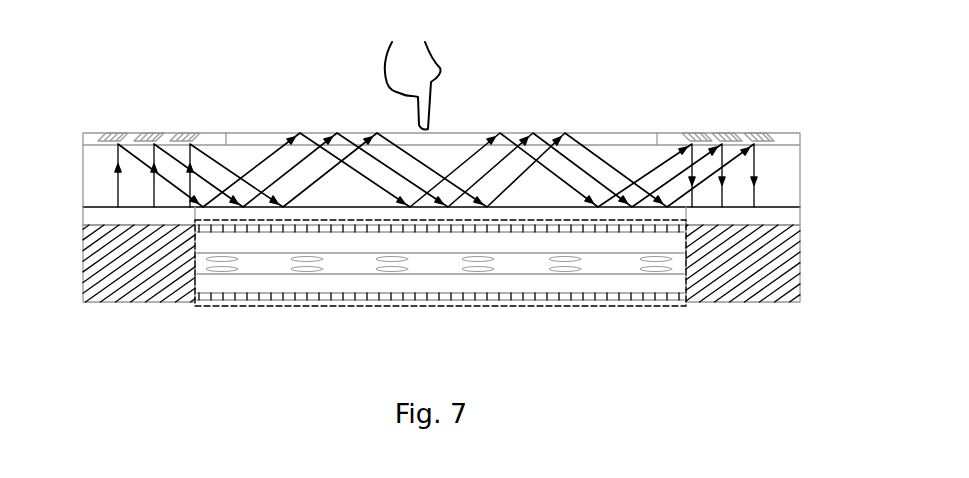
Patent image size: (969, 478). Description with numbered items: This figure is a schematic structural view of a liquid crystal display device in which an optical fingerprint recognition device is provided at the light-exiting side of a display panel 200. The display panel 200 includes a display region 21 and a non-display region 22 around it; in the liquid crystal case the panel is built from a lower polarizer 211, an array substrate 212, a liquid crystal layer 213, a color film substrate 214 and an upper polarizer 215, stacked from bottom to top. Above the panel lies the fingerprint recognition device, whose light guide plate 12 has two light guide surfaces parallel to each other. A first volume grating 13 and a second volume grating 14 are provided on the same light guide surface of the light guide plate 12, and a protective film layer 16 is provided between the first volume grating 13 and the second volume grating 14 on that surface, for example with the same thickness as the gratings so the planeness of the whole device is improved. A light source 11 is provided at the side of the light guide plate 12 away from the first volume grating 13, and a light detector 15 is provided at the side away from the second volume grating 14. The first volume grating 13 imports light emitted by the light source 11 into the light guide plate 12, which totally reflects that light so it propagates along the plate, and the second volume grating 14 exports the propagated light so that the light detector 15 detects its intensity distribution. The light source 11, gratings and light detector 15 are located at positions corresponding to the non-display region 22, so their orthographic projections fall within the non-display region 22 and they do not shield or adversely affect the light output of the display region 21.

The light source 11 is at (83, 215).
The light guide plate 12 is at (800, 175).
The first volume grating 13 is at (162, 133).
The second volume grating 14 is at (725, 135).
The light detector 15 is at (800, 217).
The protective film layer 16 is at (603, 132).
The display region 21 is at (423, 306).
The non-display region 22 is at (740, 325).
The display panel 200 is at (800, 265).
The lower polarizer 211 is at (618, 296).
The array substrate 212 is at (558, 283).
The liquid crystal layer 213 is at (303, 272).
The color film substrate 214 is at (363, 243).
The upper polarizer 215 is at (243, 232).